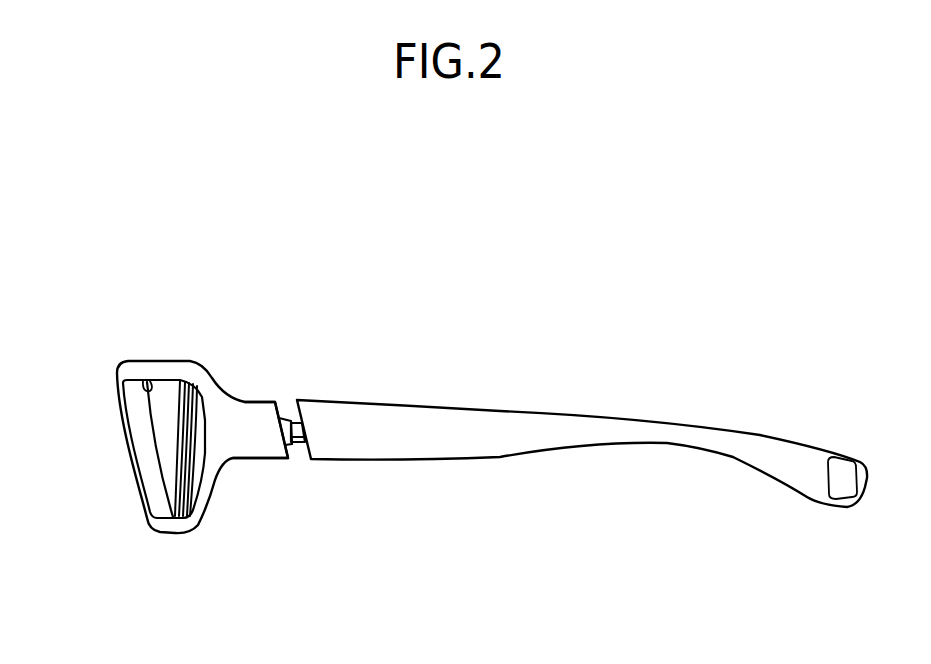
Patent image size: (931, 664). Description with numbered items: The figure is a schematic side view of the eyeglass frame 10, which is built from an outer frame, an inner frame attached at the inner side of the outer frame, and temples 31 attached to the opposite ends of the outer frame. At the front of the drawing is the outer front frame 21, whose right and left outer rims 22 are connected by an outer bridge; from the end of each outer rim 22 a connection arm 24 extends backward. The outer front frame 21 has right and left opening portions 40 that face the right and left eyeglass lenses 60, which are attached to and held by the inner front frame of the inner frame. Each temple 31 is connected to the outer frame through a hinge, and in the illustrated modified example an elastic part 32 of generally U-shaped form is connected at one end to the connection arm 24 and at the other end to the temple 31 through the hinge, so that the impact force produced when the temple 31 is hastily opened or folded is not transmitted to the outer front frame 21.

The eyeglass frame 10 is at (676, 259).
The outer front frame 21 is at (213, 252).
The outer rim 22 is at (197, 366).
The connection arm 24 is at (250, 428).
The temple 31 is at (663, 435).
The elastic part 32 is at (297, 428).
The opening portion 40 is at (198, 428).
The eyeglass lens 60 is at (172, 462).